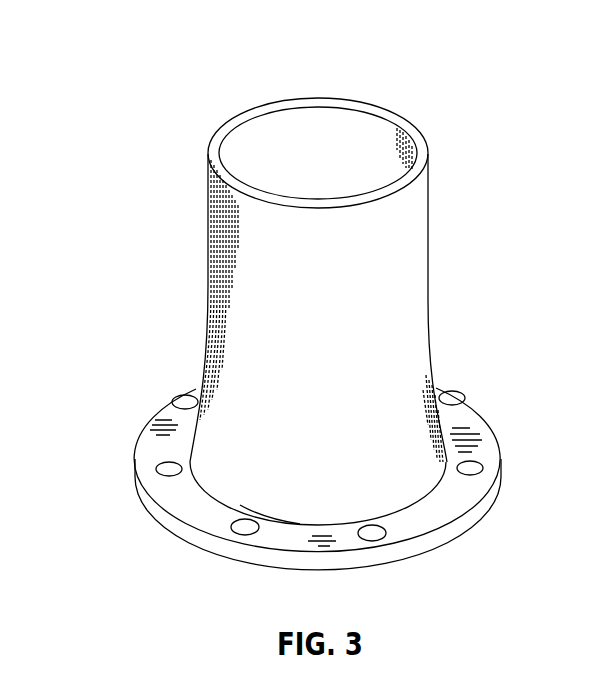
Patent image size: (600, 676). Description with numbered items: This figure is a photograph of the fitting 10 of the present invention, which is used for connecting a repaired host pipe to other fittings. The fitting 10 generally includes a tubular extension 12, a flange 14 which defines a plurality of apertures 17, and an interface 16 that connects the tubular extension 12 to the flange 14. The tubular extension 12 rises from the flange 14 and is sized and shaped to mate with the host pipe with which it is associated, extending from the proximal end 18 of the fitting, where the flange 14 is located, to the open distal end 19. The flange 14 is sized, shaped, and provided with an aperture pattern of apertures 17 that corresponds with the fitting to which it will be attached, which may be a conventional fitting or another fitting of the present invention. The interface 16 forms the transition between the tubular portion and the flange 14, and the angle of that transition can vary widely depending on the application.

The fitting 10 is at (145, 75).
The tubular extension 12 is at (328, 318).
The flange 14 is at (188, 498).
The interface 16 is at (208, 477).
The apertures 17 is at (385, 533).
The proximal end 18 is at (273, 520).
The distal end 19 is at (378, 108).